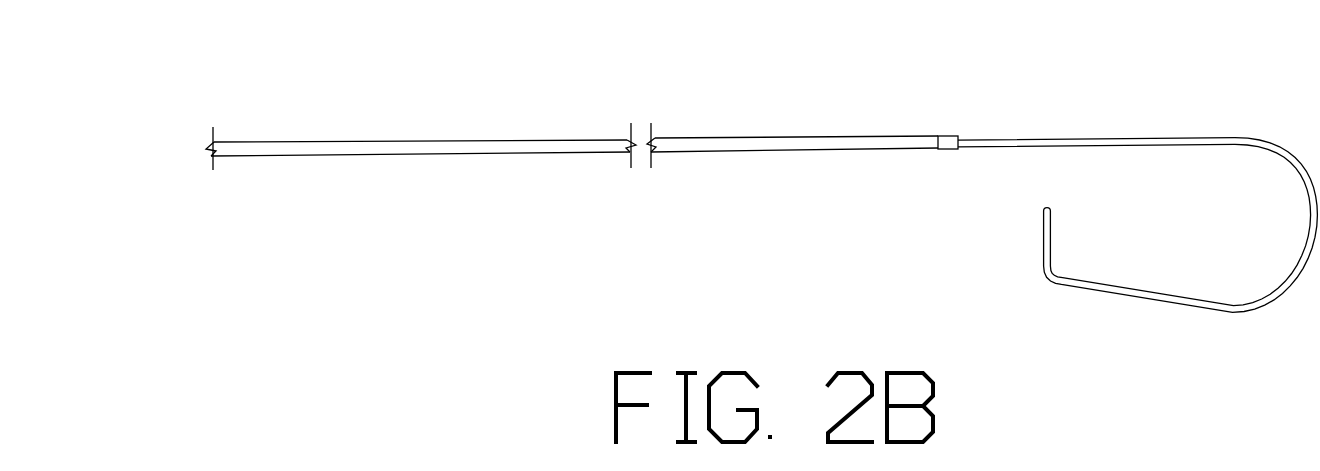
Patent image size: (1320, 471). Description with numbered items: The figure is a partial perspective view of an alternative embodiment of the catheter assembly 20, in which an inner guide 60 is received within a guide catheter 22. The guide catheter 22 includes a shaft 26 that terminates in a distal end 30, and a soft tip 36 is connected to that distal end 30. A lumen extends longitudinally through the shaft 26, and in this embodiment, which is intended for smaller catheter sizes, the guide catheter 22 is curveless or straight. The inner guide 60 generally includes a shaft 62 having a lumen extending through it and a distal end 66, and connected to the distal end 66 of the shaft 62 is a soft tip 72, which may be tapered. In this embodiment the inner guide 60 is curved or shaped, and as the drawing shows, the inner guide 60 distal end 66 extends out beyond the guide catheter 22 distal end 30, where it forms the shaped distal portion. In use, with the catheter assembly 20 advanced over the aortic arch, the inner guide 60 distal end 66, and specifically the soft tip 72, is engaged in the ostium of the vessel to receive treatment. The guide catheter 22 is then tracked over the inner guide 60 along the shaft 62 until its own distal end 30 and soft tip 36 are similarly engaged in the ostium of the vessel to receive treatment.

The catheter assembly 20 is at (209, 77).
The guide catheter 22 is at (360, 120).
The shaft 26 is at (407, 142).
The distal end 30 is at (888, 122).
The soft tip 36 is at (942, 152).
The inner guide 60 is at (1037, 100).
The shaft 62 is at (1048, 146).
The distal end 66 is at (1023, 273).
The soft tip 72 is at (1042, 225).